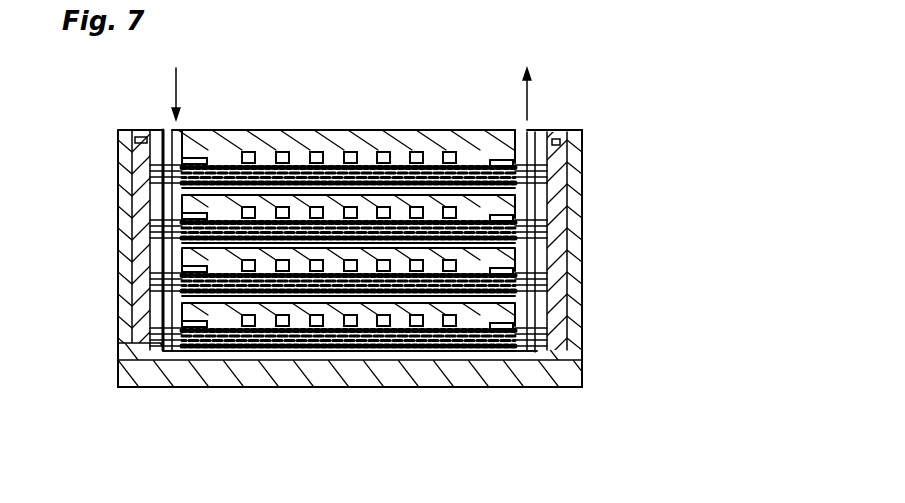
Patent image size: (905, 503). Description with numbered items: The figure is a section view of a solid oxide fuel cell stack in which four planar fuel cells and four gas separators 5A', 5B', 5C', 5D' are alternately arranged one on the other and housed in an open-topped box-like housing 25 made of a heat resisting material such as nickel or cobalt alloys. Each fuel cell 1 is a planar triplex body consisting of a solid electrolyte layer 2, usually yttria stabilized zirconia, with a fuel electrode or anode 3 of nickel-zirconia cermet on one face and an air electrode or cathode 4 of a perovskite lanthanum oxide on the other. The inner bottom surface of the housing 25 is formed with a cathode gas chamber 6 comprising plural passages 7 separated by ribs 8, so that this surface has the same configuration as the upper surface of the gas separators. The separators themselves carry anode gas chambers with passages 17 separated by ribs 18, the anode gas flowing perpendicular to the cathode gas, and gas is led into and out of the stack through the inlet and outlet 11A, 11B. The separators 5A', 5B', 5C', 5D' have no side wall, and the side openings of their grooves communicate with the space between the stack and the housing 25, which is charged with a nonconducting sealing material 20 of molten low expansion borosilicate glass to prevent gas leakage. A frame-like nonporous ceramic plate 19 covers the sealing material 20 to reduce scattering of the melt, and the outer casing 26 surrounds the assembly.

The solid oxide fuel cell 1 is at (405, 440).
The solid electrolyte layer 2 is at (372, 345).
The anode 3 is at (332, 345).
The cathode 4 is at (430, 322).
The gas separator 5A' is at (272, 150).
The gas separator 5B' is at (272, 212).
The gas separator 5C' is at (272, 274).
The gas separator 5D' is at (272, 326).
The cathode gas chamber 6 is at (247, 352).
The passage 7 is at (312, 352).
The rib 8 is at (433, 333).
The gas inlet 11A is at (172, 128).
The gas outlet 11B is at (522, 132).
The passage 17 is at (243, 150).
The rib 18 is at (270, 152).
The frame-like nonporous ceramic plate 19 is at (557, 138).
The sealing material 20 is at (553, 190).
The housing 25 is at (118, 352).
The outer casing 26 is at (575, 302).